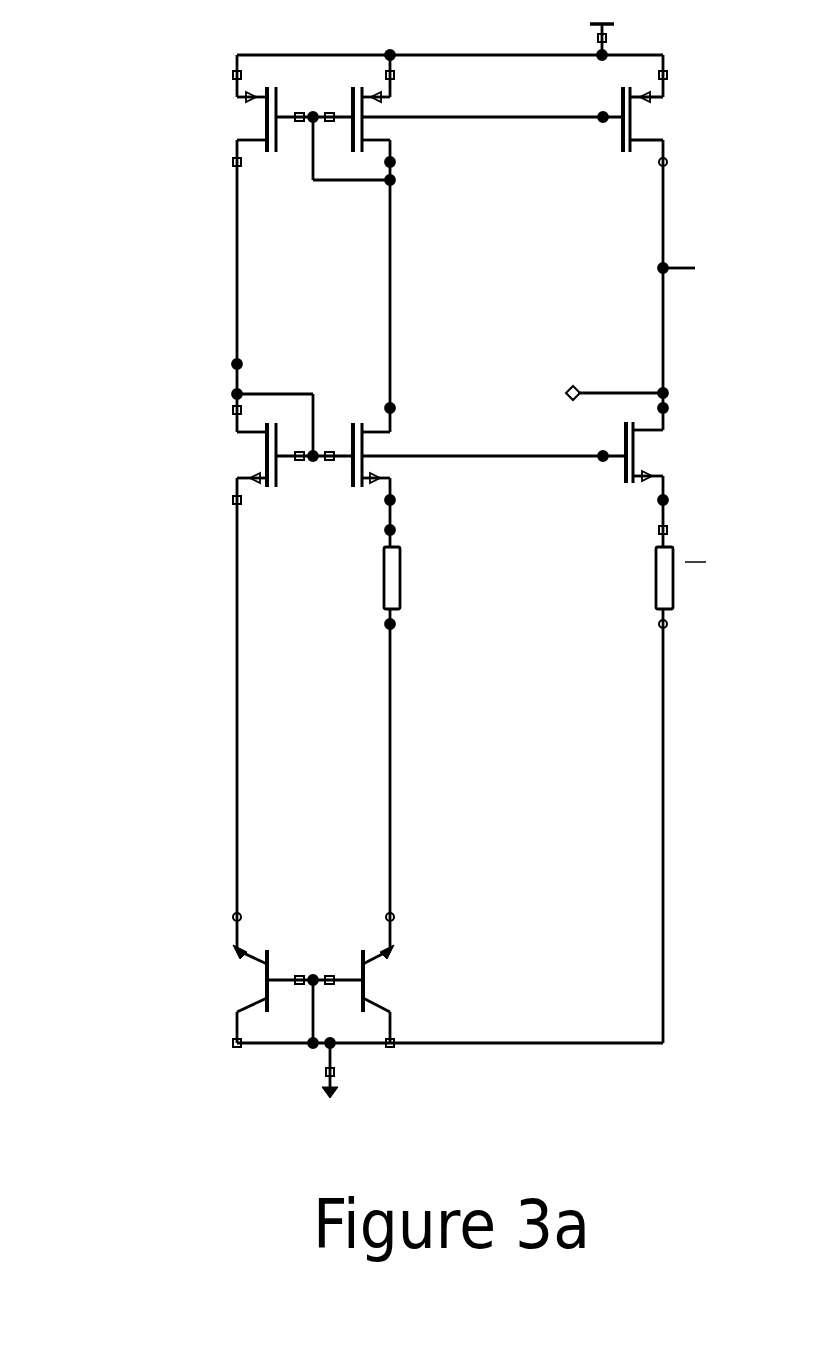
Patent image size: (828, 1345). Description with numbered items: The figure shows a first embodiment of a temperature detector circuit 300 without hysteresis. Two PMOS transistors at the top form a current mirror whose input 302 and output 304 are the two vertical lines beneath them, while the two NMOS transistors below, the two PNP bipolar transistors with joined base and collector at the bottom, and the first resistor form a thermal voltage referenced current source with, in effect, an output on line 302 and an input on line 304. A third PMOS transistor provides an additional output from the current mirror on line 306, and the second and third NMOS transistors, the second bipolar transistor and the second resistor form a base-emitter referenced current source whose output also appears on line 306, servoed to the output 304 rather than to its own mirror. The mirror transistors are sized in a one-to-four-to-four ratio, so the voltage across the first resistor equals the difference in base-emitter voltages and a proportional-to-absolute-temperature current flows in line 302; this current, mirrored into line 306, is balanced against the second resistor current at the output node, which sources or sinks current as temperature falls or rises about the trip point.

The temperature detector circuit 300 is at (162, 1145).
The current mirror input 302 is at (390, 253).
The current mirror output 304 is at (237, 253).
The additional current mirror output line 306 is at (663, 252).